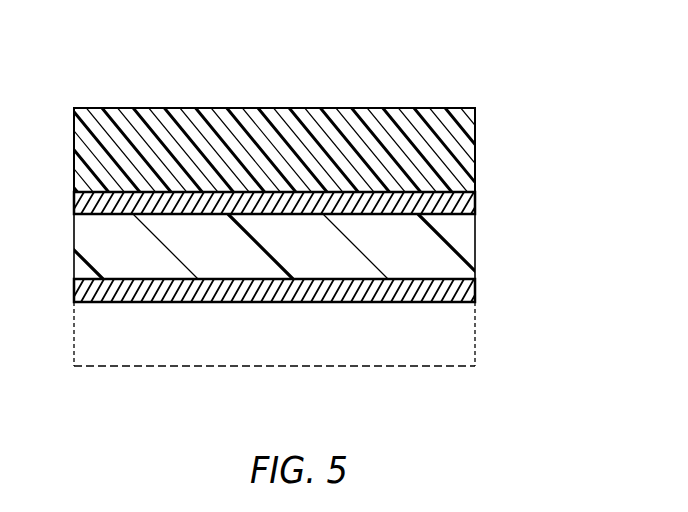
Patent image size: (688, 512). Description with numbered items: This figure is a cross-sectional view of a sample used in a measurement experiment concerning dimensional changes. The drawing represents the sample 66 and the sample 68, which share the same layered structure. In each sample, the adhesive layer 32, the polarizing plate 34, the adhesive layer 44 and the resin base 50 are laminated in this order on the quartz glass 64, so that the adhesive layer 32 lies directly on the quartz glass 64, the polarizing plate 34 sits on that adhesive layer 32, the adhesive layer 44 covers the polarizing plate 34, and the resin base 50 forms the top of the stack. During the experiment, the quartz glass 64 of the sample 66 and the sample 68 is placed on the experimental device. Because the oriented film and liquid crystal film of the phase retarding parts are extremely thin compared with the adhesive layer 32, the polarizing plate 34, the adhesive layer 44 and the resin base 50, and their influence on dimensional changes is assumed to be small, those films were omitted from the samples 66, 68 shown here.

The sample 66 is at (385, 92).
The sample 68 is at (284, 196).
The resin base 50 is at (476, 145).
The adhesive layer 44 is at (476, 208).
The polarizing plate 34 is at (476, 248).
The adhesive layer 32 is at (476, 293).
The quartz glass 64 is at (476, 340).